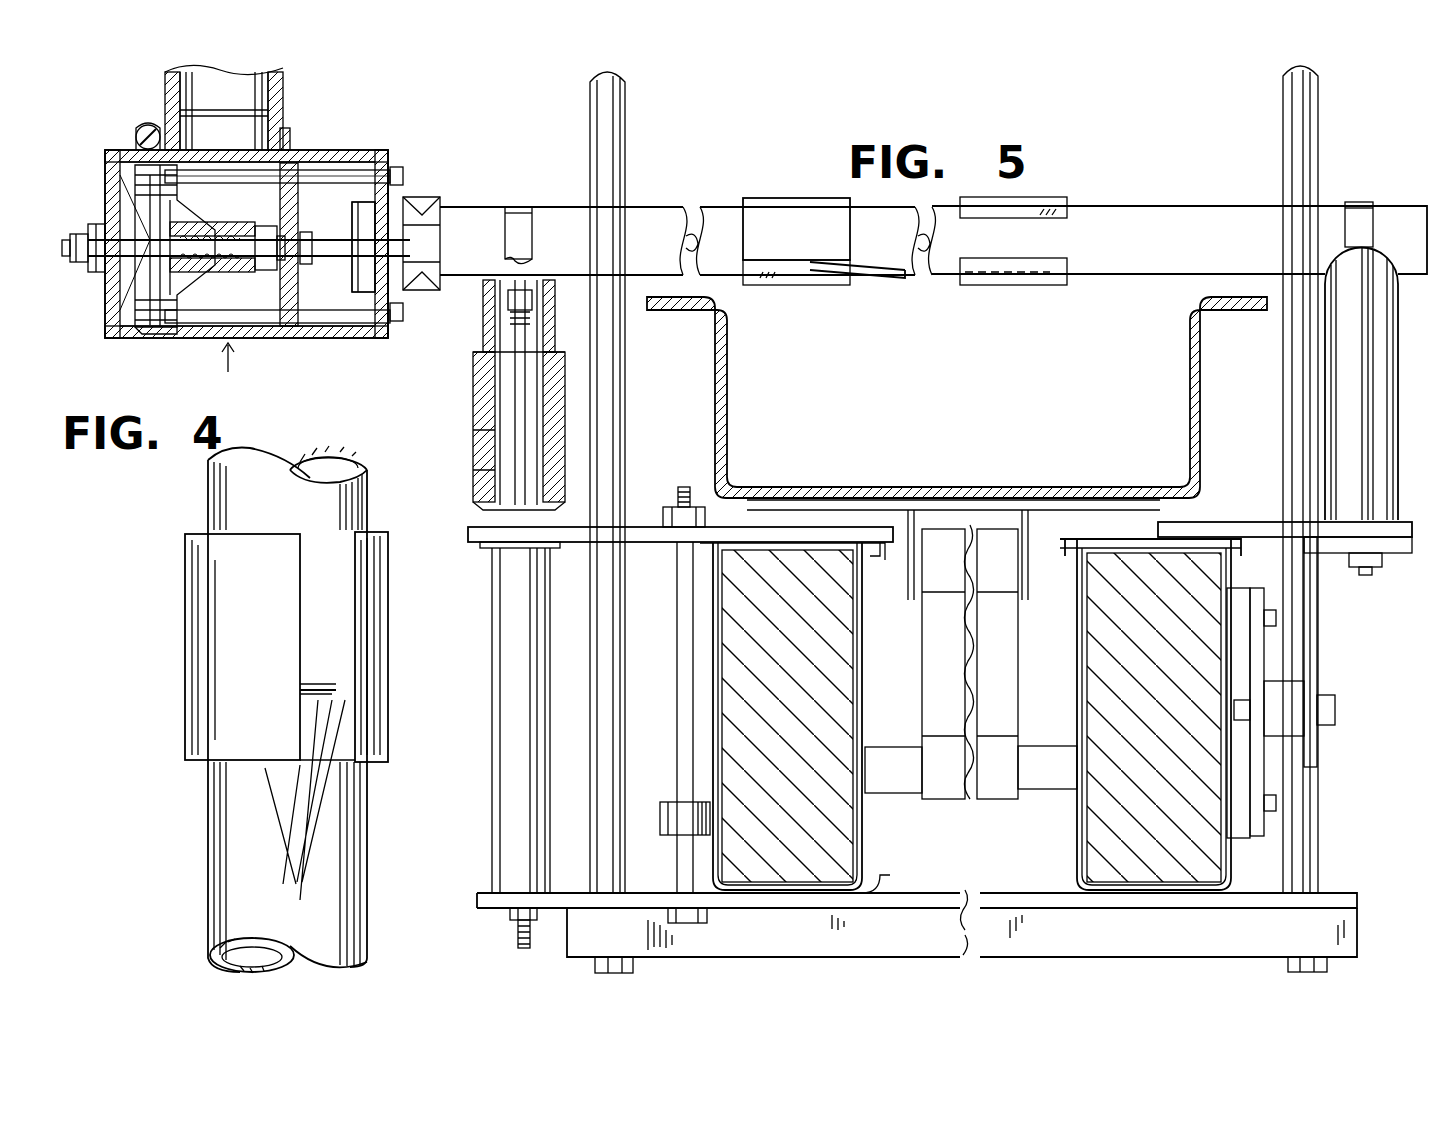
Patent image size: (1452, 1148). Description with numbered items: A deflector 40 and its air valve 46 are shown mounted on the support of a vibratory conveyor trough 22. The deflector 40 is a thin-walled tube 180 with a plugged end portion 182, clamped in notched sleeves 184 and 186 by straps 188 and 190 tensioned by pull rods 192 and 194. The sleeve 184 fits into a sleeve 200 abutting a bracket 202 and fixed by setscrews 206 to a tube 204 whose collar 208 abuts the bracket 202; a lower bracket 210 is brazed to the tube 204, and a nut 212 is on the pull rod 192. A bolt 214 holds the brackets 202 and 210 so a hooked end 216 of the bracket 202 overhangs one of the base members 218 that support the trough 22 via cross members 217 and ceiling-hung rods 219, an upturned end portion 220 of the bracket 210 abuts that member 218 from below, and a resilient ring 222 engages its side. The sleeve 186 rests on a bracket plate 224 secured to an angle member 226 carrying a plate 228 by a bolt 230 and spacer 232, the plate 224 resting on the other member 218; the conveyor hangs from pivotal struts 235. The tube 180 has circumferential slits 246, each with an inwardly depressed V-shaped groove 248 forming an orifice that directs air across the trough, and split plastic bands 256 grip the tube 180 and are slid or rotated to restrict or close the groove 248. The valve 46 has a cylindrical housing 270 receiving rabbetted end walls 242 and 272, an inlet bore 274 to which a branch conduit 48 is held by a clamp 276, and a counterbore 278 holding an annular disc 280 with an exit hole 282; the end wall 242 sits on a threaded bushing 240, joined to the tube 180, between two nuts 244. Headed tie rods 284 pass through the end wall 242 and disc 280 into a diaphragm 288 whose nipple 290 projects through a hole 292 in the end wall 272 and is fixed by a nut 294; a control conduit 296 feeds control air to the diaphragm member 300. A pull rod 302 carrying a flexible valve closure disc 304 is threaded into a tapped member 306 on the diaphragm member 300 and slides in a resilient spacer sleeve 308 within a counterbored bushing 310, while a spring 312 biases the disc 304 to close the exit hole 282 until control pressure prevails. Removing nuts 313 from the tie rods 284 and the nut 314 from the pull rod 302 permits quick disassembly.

In FIG. 5, the conveyor trough 22 is at (728, 436).
In FIG. 4, the deflector 40 is at (411, 695).
In FIG. 5, the deflector 40 is at (680, 190).
In FIG. 4, the valve 46 is at (233, 371).
In FIG. 4, the branch conduit 48 is at (283, 78).
In FIG. 4, the tube 180 is at (360, 830).
In FIG. 5, the tube 180 is at (1172, 218).
In FIG. 5, the plugged end portion 182 is at (1405, 218).
In FIG. 5, the sleeve 184 is at (486, 316).
In FIG. 5, the sleeve 186 is at (1396, 470).
In FIG. 5, the strap 188 is at (518, 210).
In FIG. 5, the strap 190 is at (1358, 204).
In FIG. 5, the pull rod 192 is at (518, 410).
In FIG. 5, the pull rod 194 is at (1366, 576).
In FIG. 5, the sleeve 200 is at (476, 386).
In FIG. 5, the bracket 202 is at (642, 536).
In FIG. 5, the tube 204 is at (492, 614).
In FIG. 5, the setscrews 206 is at (476, 495).
In FIG. 5, the collar 208 is at (480, 548).
In FIG. 5, the lower bracket 210 is at (645, 893).
In FIG. 5, the nut 212 is at (510, 915).
In FIG. 5, the bolt 214 is at (678, 698).
In FIG. 5, the hooked end 216 is at (876, 560).
In FIG. 5, the cross members 217 is at (1056, 905).
In FIG. 5, the base members 218 is at (858, 682).
In FIG. 5, the rods 219 is at (615, 98).
In FIG. 5, the upturned end portion 220 is at (595, 966).
In FIG. 5, the ring 222 is at (664, 810).
In FIG. 5, the bracket plate 224 is at (1242, 528).
In FIG. 5, the angle member 226 is at (1318, 750).
In FIG. 5, the plate 228 is at (1260, 836).
In FIG. 5, the bolt 230 is at (1335, 710).
In FIG. 5, the spacer 232 is at (1290, 694).
In FIG. 5, the pivotal struts 235 is at (986, 826).
In FIG. 4, the threaded bushing 240 is at (378, 300).
In FIG. 4, the end wall 242 is at (418, 197).
In FIG. 4, the nuts 244 is at (372, 210).
In FIG. 4, the transverse circumferential slits 246 is at (338, 688).
In FIG. 4, the groove 248 is at (318, 708).
In FIG. 5, the groove 248 is at (880, 276).
In FIG. 4, the split plastic sleeves or bands 256 is at (392, 584).
In FIG. 5, the split plastic sleeves or bands 256 is at (822, 280).
In FIG. 4, the cylindrical housing 270 is at (256, 338).
In FIG. 4, the end wall 272 is at (118, 330).
In FIG. 4, the cylindrical inlet bore 274 is at (283, 105).
In FIG. 4, the clamp 276 is at (290, 135).
In FIG. 4, the counterbore 278 is at (386, 338).
In FIG. 4, the annular disc 280 is at (306, 268).
In FIG. 4, the exit hole 282 is at (268, 270).
In FIG. 4, the headed tie rods 284 is at (350, 172).
In FIG. 4, the diaphragm 288 is at (150, 330).
In FIG. 4, the threaded nipple 290 is at (80, 262).
In FIG. 4, the hole 292 is at (114, 160).
In FIG. 4, the nut 294 is at (96, 228).
In FIG. 4, the control conduit 296 is at (78, 234).
In FIG. 4, the diaphragm member 300 is at (155, 332).
In FIG. 4, the pull rod 302 is at (280, 262).
In FIG. 4, the flexible valve closure disc 304 is at (363, 292).
In FIG. 4, the tapped member 306 is at (140, 275).
In FIG. 4, the resilient spacer sleeve 308 is at (240, 272).
In FIG. 4, the counterbored bushing 310 is at (172, 290).
In FIG. 4, the spring 312 is at (165, 300).
In FIG. 4, the nuts 313 is at (403, 172).
In FIG. 4, the nut 314 is at (296, 195).